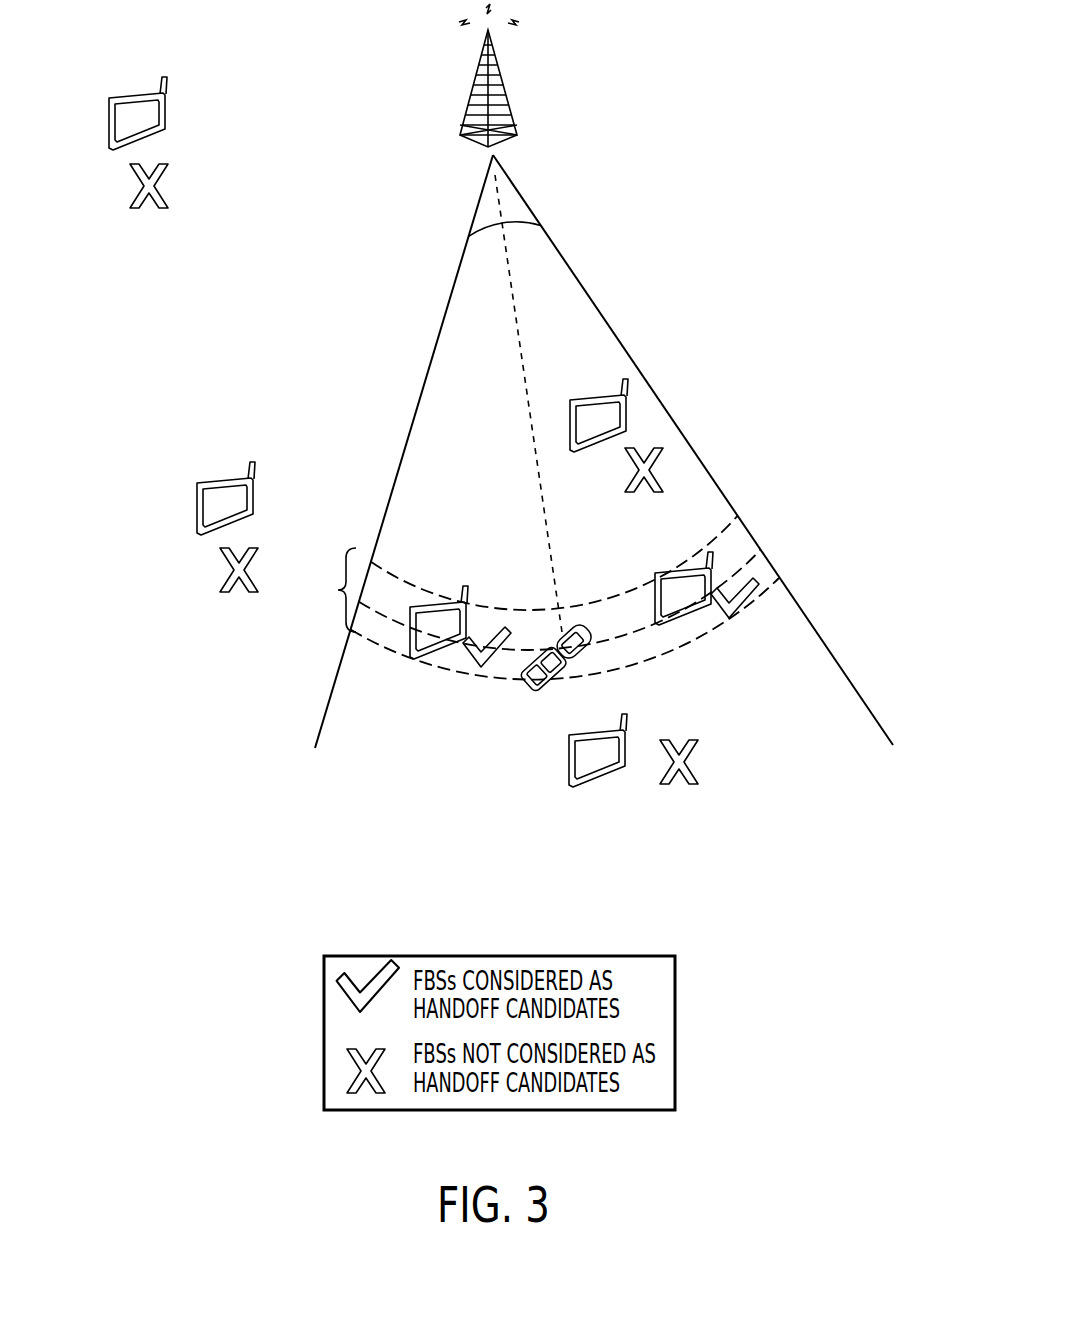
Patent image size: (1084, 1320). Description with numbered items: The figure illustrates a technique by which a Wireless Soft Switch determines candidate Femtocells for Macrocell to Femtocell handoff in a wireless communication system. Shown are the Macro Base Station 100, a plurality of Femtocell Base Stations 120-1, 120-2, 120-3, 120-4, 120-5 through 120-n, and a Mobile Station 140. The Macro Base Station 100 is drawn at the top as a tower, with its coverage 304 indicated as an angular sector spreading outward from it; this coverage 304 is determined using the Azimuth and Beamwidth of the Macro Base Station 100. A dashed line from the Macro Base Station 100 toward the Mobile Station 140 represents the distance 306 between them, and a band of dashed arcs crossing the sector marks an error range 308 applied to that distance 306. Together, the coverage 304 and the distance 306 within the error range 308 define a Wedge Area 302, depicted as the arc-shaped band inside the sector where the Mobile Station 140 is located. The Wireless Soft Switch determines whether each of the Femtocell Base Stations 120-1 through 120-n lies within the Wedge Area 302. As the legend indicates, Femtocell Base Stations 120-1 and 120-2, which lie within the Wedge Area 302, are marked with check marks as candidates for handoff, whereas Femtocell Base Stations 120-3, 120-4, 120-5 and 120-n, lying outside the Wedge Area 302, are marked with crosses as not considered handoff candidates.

The Macro Base Station 100 is at (478, 68).
The Wedge Area 302 is at (527, 584).
The coverage 304 is at (532, 232).
The distance 306 is at (525, 370).
The error range 308 is at (328, 590).
The Femtocell BS 120-1 is at (424, 660).
The Femtocell BS 120-2 is at (694, 625).
The Femtocell BS 120-3 is at (597, 790).
The Femtocell BS 120-4 is at (628, 410).
The Femtocell BS 120-5 is at (194, 508).
The Femtocell BS 120-n is at (167, 107).
The Mobile Station 140 is at (533, 690).